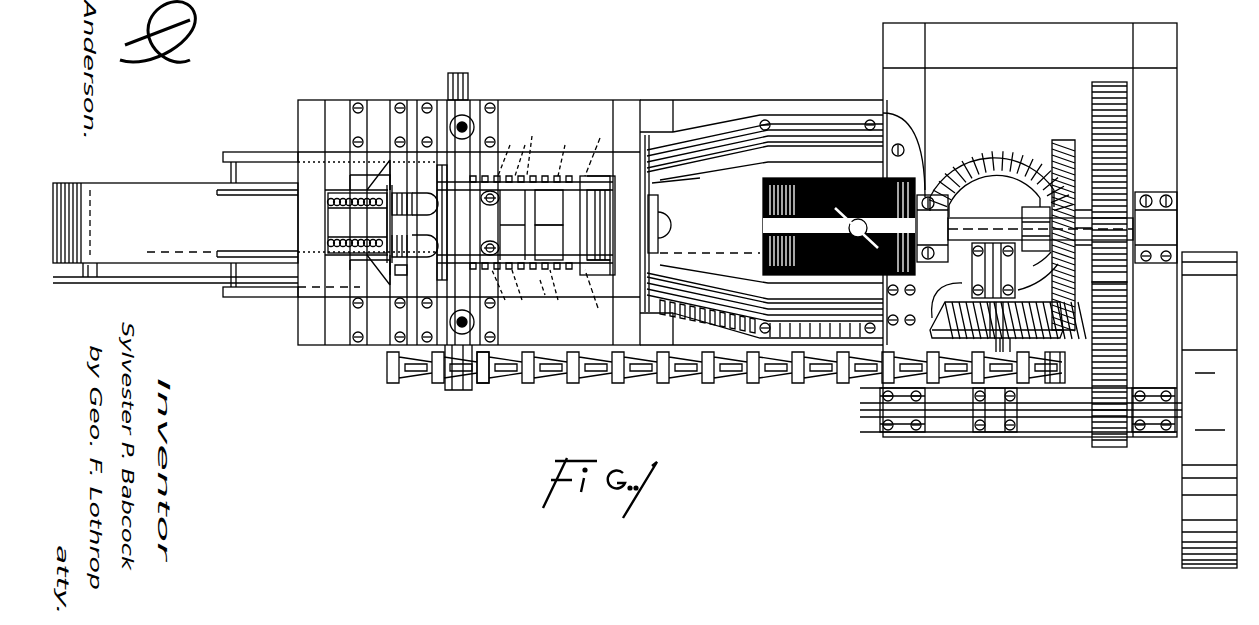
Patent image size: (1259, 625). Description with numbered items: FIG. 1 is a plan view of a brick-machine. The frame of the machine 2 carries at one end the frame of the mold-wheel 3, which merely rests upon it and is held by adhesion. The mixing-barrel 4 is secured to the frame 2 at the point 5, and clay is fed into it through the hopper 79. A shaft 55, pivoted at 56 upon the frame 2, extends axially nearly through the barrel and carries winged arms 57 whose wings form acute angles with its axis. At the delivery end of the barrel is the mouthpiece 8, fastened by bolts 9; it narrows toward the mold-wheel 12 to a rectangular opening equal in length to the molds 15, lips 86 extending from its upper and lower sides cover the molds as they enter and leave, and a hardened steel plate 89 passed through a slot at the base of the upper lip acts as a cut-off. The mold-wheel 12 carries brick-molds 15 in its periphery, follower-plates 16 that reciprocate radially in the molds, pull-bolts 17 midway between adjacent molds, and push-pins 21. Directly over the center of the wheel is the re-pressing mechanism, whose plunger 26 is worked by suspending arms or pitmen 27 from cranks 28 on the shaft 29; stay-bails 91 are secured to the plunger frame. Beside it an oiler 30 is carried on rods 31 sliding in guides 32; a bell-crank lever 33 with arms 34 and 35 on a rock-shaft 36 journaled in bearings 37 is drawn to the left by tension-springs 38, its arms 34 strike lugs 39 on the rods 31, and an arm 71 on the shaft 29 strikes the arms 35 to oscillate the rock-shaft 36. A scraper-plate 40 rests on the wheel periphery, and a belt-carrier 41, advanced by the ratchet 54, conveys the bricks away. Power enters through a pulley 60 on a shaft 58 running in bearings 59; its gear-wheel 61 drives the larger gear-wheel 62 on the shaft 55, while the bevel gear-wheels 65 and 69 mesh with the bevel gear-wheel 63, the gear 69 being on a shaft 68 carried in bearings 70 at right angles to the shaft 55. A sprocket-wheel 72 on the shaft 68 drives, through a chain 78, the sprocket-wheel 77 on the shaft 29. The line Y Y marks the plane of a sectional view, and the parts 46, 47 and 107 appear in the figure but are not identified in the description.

The frame of the machine 2 is at (930, 242).
The frame of the mold-wheel 3 is at (590, 222).
The mixing-barrel 4 is at (765, 226).
The securing point of mixing-barrel 5 is at (911, 219).
The mouthpiece 8 is at (676, 184).
The bolts 9 is at (668, 226).
The mold-wheel 12 is at (524, 226).
The brick-molds 15 is at (533, 207).
The follower-plates 16 is at (533, 242).
The pull-bolts 17 is at (558, 226).
The push-pins 21 is at (540, 202).
The plunger 26 is at (511, 223).
The suspending arms or pitmen 27 is at (525, 225).
The cranks 28 is at (506, 226).
The shaft 29 is at (459, 231).
The oiler 30 is at (415, 225).
The rods 31 is at (254, 245).
The guides 32 is at (324, 223).
The bell-crank lever 33 is at (360, 224).
The arms 34 is at (360, 226).
The arms 35 is at (403, 201).
The rock-shaft 36 is at (411, 263).
The bearings 37 is at (388, 293).
The tension-springs 38 is at (367, 208).
The lugs 39 is at (361, 222).
The scraper-plate 40 is at (342, 298).
The belt-carrier 41 is at (175, 223).
The bar 46 is at (255, 308).
The post 47 is at (228, 170).
The ratchet 54 is at (175, 284).
The shaft 55 is at (1010, 217).
The pivots 56 is at (1178, 208).
The winged arms 57 is at (839, 226).
The shaft 58 is at (1082, 432).
The bearings 59 is at (1157, 432).
The pulley 60 is at (1182, 510).
The gear-wheel 61 is at (1109, 379).
The larger gear-wheel 62 is at (1092, 94).
The bevel gear-wheel 63 is at (1068, 135).
The bevel gear-wheel 65 is at (1001, 208).
The shaft 68 is at (990, 340).
The bevel gear-wheel 69 is at (1036, 337).
The bearings 70 is at (1010, 432).
The arm 71 is at (450, 222).
The sprocket-wheel 72 is at (1065, 368).
The sprocket-wheel 77 is at (522, 383).
The chain 78 is at (724, 378).
The hopper 79 is at (763, 222).
The lips 86 is at (594, 208).
The hardened steel plate 89 is at (610, 240).
The stay-bails 91 is at (484, 220).
The guide 107 is at (603, 218).
The section line Y Y is at (442, 257).